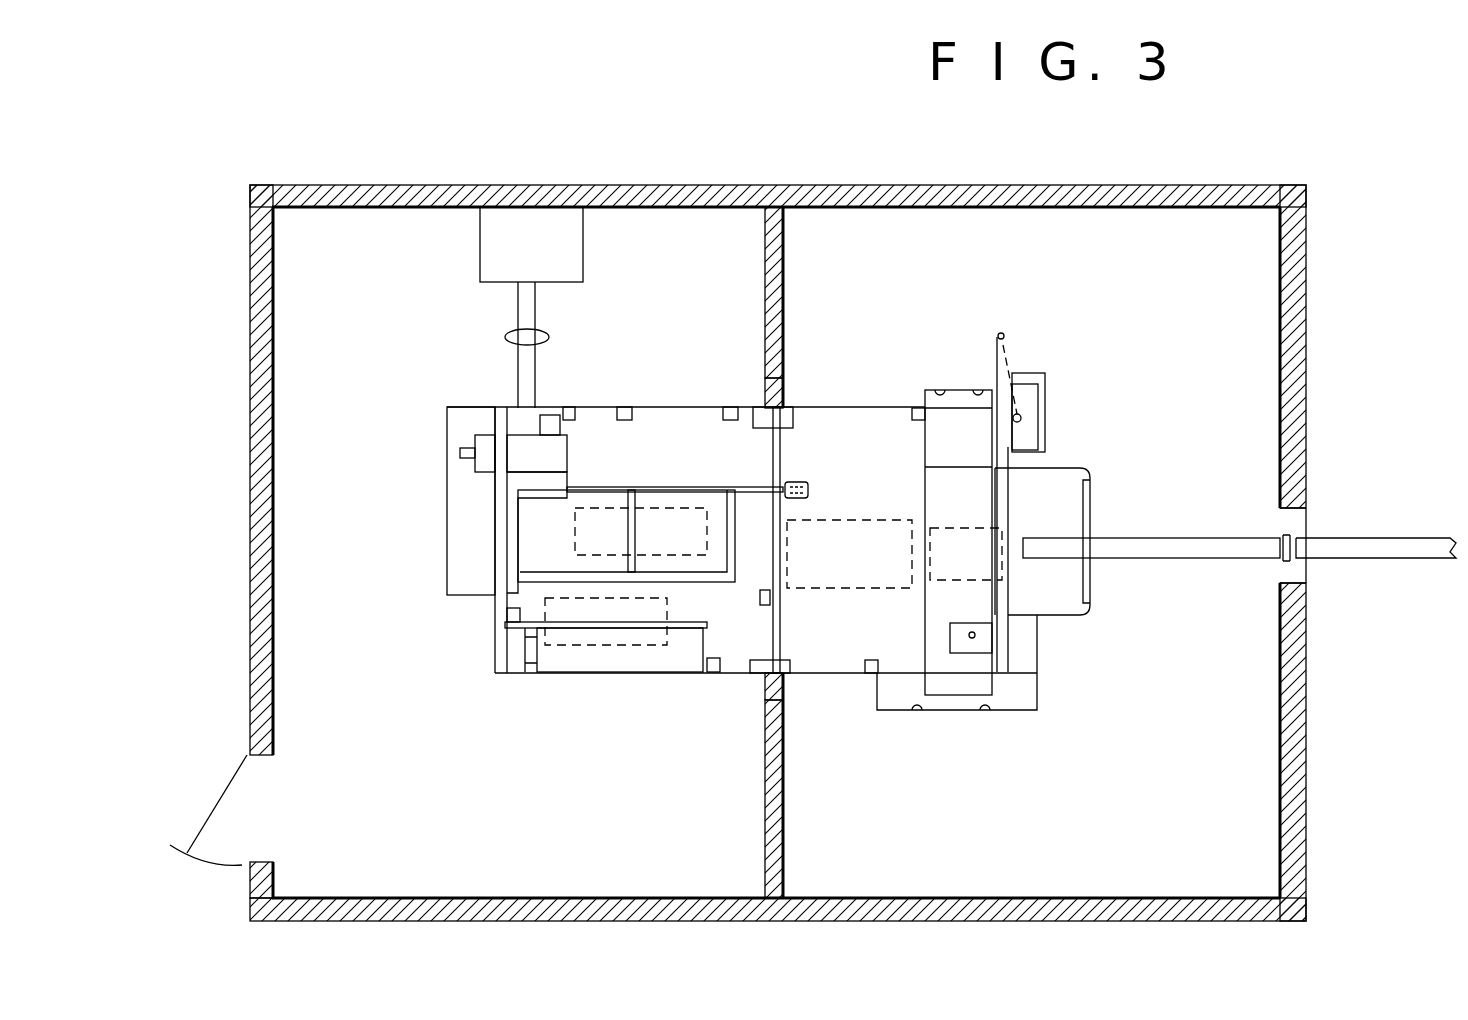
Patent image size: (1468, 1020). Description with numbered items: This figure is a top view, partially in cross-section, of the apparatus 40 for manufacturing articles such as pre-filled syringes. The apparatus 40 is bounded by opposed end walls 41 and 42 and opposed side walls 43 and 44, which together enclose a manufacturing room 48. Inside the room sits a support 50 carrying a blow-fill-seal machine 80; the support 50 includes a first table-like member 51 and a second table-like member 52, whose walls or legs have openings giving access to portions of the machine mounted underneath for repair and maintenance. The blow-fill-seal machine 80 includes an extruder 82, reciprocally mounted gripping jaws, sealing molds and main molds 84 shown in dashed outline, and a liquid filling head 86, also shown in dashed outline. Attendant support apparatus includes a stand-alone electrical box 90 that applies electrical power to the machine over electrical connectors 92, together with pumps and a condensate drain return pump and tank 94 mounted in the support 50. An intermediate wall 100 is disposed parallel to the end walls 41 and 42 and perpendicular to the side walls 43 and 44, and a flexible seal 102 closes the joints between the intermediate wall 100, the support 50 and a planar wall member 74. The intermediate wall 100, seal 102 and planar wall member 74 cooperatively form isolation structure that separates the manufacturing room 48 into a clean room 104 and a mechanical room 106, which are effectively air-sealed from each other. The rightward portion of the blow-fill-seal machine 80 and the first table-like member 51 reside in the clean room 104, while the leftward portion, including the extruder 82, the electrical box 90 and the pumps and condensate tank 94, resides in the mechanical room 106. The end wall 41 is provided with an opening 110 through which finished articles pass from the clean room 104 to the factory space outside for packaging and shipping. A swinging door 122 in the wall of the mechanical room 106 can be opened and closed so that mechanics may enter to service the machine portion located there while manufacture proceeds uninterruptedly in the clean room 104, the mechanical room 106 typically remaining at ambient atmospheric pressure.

The apparatus 40 is at (1197, 158).
The end wall 41 is at (1306, 352).
The end wall 42 is at (250, 352).
The side wall 43 is at (628, 185).
The side wall 44 is at (640, 898).
The manufacturing room 48 is at (1180, 290).
The support 50 is at (786, 532).
The first table-like member 51 is at (855, 675).
The second table-like member 52 is at (690, 673).
The planar wall member 74 is at (785, 410).
The blow-fill-seal machine 80 is at (660, 584).
The extruder 82 is at (650, 508).
The gripping jaws, sealing molds and main molds 84 is at (847, 520).
The liquid filling head 86 is at (975, 528).
The stand alone electrical box 90 is at (498, 218).
The electrical connectors 92 is at (506, 337).
The pumps and condensate drain return pump and tank 94 is at (605, 645).
The intermediate wall 100 is at (785, 268).
The seal 102 is at (765, 393).
The clean room 104 is at (1213, 775).
The mechanical room 106 is at (248, 888).
The opening 110 is at (1293, 523).
The swinging door 122 is at (213, 798).